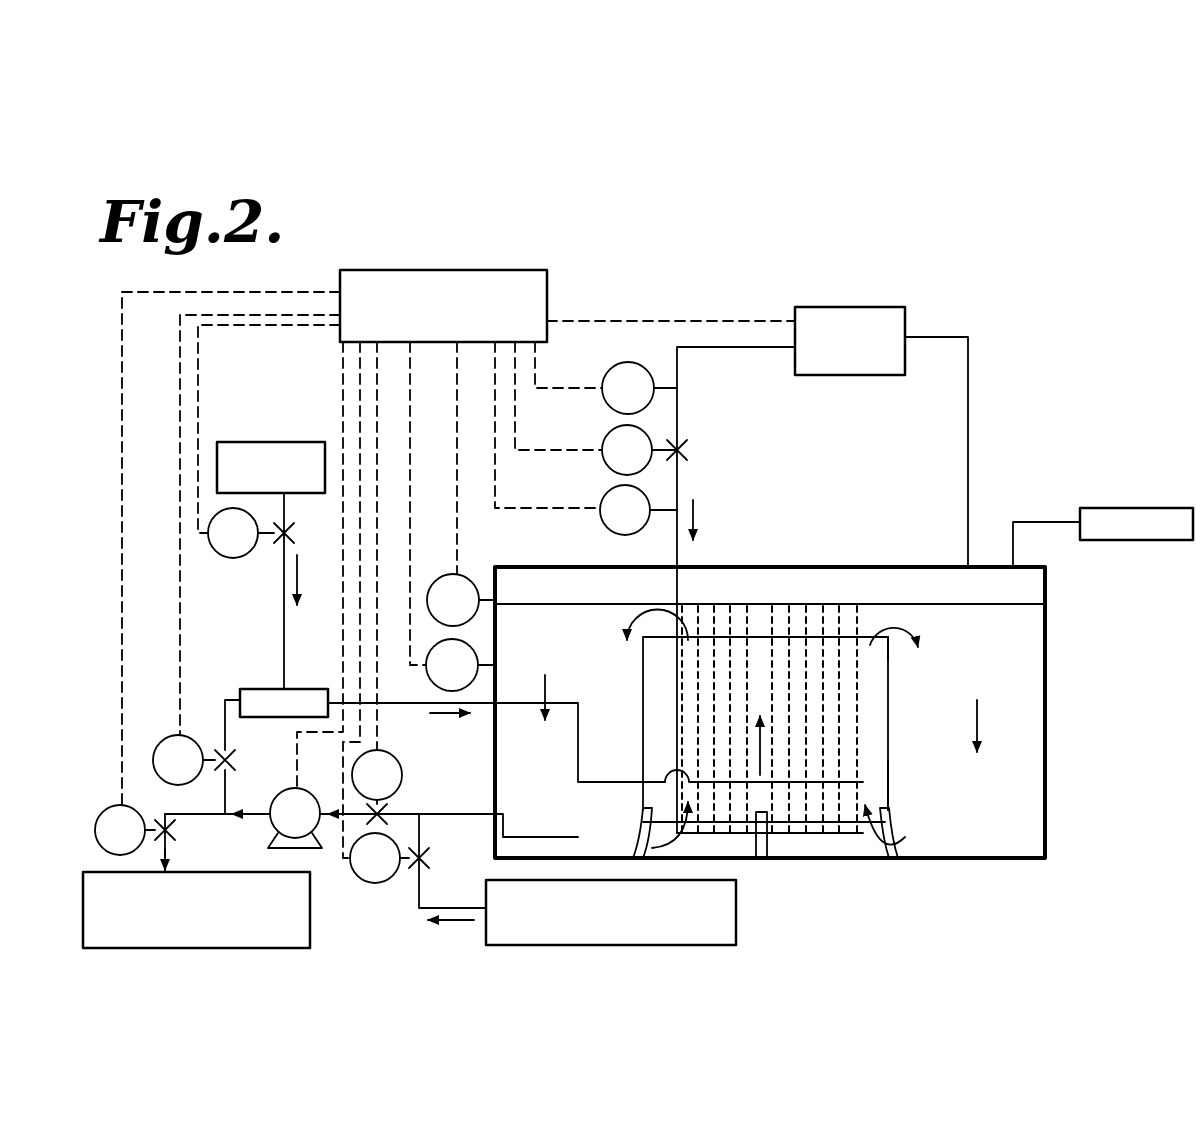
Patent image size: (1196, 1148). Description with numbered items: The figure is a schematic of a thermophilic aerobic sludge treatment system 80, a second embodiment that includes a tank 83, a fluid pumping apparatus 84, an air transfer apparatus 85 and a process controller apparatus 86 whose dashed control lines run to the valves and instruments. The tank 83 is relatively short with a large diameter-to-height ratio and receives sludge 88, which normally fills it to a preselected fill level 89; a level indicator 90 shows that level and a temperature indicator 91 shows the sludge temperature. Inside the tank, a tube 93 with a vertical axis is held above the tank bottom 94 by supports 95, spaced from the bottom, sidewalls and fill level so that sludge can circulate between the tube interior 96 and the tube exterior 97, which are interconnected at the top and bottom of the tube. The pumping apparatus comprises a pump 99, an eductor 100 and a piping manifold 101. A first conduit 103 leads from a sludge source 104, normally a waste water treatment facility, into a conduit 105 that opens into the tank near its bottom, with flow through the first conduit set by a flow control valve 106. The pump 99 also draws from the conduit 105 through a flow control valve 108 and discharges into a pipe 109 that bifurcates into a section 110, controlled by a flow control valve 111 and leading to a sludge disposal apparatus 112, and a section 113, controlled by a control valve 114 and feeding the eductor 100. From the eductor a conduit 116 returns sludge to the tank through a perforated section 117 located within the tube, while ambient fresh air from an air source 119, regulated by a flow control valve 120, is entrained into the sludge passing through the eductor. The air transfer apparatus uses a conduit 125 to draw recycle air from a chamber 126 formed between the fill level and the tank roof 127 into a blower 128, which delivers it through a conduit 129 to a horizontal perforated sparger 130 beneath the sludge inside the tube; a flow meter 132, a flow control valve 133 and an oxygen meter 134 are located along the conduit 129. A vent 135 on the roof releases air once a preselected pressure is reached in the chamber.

The thermophilic aerobic system 80 is at (1069, 440).
The tank 83 is at (1047, 722).
The fluid pumping apparatus 84 is at (352, 900).
The air transfer apparatus 85 is at (886, 282).
The process controller apparatus 86 is at (505, 270).
The sludge 88 is at (994, 673).
The fill level 89 is at (1027, 604).
The level indicator 90 is at (468, 576).
The temperature indicator 91 is at (472, 650).
The tube 93 is at (888, 733).
The tank bottom 94 is at (948, 852).
The supports 95 is at (770, 850).
The tube interior 96 is at (888, 670).
The tube exterior 97 is at (888, 788).
The pump 99 is at (272, 838).
The eductor 100 is at (256, 689).
The piping manifold 101 is at (230, 783).
The first conduit 103 is at (433, 905).
The source of sludge 104 is at (588, 946).
The conduit 105 is at (407, 812).
The flow control valve 106 is at (385, 882).
The flow control valve 108 is at (398, 758).
The pipe 109 is at (223, 791).
The pipe section 110 is at (172, 845).
The flow control valve 111 is at (113, 805).
The sludge disposal apparatus 112 is at (190, 948).
The pipe section 113 is at (222, 723).
The control valve 114 is at (160, 741).
The conduit 116 is at (395, 702).
The perforated section 117 is at (802, 781).
The source of ambient fresh air 119 is at (255, 442).
The flow control valve 120 is at (232, 558).
The conduit 125 is at (968, 414).
The chamber 126 is at (872, 571).
The roof 127 is at (768, 568).
The blower 128 is at (905, 316).
The conduit 129 is at (752, 348).
The sparger 130 is at (839, 835).
The flow meter 132 is at (616, 364).
The flow control valve 133 is at (611, 432).
The oxygen meter 134 is at (605, 520).
The vent 135 is at (1125, 508).